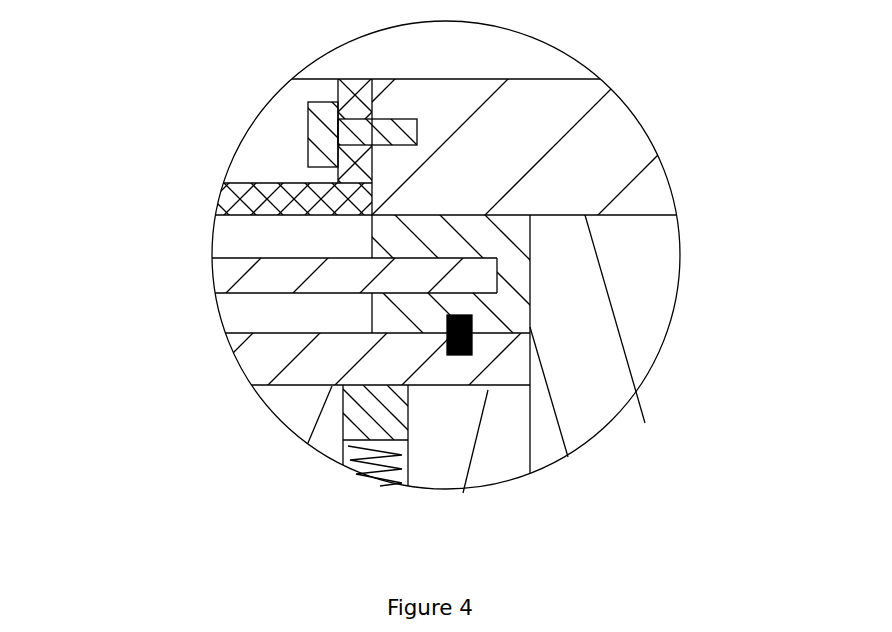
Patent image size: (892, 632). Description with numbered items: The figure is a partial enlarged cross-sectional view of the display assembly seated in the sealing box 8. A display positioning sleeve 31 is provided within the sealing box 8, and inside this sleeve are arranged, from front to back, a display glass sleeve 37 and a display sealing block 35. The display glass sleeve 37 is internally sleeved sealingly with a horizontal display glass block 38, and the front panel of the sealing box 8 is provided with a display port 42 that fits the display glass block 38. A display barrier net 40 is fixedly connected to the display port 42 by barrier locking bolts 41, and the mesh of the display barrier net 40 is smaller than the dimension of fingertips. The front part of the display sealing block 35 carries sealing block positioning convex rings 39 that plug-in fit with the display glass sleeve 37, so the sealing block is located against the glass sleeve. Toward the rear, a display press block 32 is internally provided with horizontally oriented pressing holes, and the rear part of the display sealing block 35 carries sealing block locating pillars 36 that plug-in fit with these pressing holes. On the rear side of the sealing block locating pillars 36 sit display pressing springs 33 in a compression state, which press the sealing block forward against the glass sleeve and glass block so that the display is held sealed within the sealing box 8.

The sealing box 8 is at (573, 172).
The display positioning sleeve 31 is at (638, 300).
The display press block 32 is at (440, 440).
The display pressing springs 33 is at (362, 470).
The display sealing block 35 is at (253, 362).
The sealing block locating pillars 36 is at (357, 413).
The display glass sleeve 37 is at (513, 297).
The display glass block 38 is at (225, 268).
The sealing block positioning convex rings 39 is at (463, 355).
The display barrier net 40 is at (225, 190).
The barrier locking bolts 41 is at (375, 119).
The display port 42 is at (290, 127).